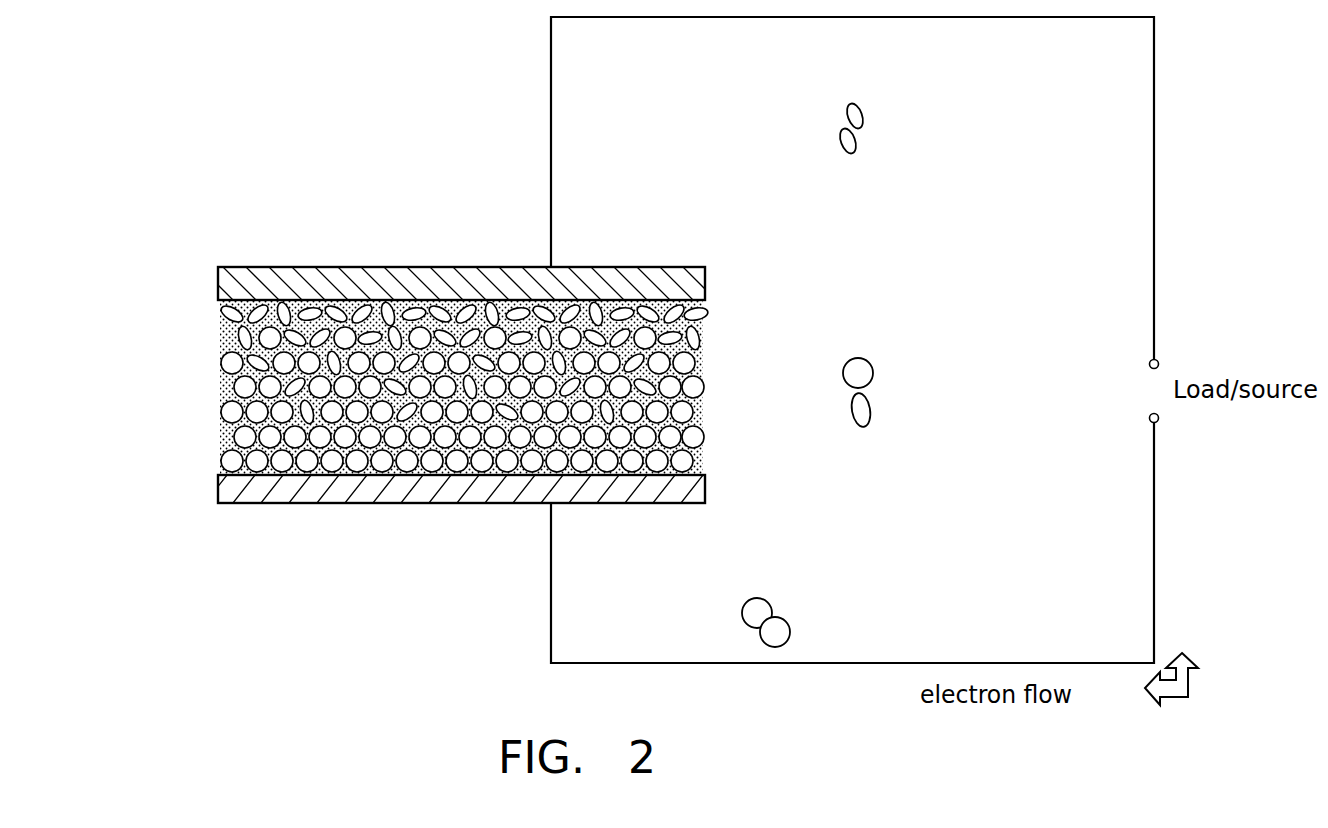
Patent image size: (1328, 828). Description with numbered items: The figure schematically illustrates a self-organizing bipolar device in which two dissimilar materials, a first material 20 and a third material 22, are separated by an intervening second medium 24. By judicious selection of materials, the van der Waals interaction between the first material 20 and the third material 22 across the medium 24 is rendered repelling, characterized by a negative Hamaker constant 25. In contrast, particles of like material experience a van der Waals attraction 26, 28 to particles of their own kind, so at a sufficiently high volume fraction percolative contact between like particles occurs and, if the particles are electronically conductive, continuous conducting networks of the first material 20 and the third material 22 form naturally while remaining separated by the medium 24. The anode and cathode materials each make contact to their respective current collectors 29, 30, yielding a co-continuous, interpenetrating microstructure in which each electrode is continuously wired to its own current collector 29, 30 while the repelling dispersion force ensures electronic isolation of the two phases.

The material 1 20 is at (216, 303).
The material 3 22 is at (218, 456).
The medium 2 24 is at (232, 408).
The negative Hamaker constant A123 25 is at (662, 392).
The van der Waals attraction of material 1 particles 26 is at (700, 310).
The van der Waals attraction of material 3 particles 28 is at (906, 575).
The current collector 29 is at (497, 265).
The current collector 30 is at (502, 508).